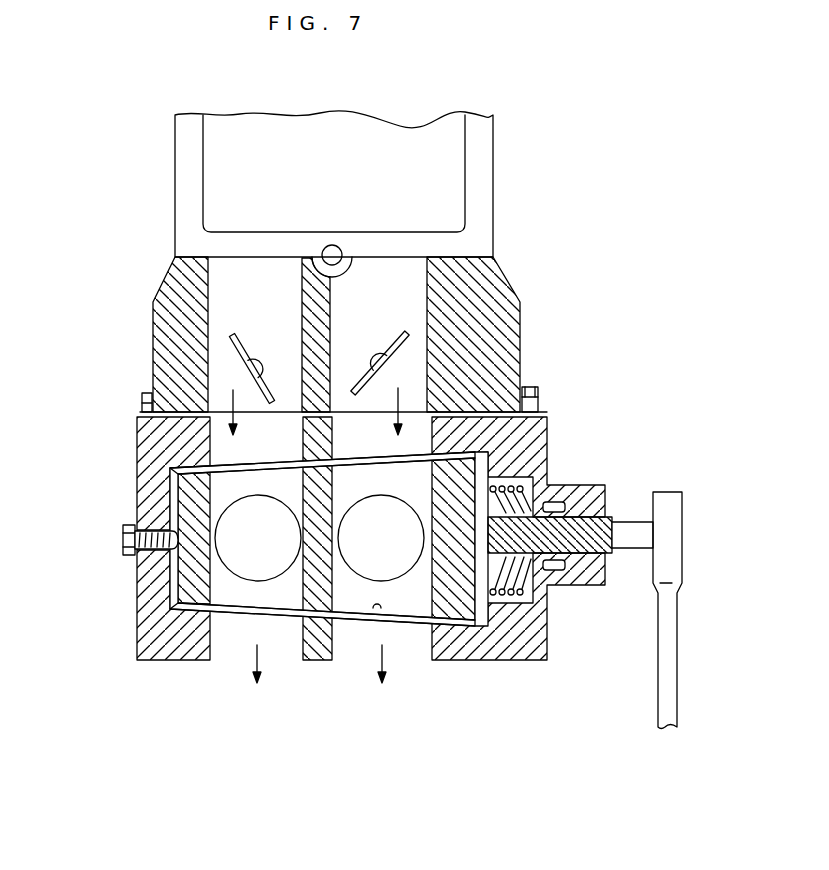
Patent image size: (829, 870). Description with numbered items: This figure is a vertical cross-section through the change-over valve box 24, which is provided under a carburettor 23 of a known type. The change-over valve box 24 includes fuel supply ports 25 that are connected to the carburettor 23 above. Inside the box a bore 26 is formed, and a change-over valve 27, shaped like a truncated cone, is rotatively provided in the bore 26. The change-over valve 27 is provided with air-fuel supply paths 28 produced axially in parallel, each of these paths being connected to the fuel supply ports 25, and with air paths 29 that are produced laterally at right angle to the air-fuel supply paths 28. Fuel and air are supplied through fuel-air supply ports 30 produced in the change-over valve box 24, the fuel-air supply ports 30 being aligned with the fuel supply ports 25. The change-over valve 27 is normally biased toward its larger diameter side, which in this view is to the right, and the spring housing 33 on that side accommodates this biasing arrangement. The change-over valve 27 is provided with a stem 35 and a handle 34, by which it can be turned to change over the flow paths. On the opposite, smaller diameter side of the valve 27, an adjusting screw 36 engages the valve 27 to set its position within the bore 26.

The carburettor 23 is at (497, 283).
The change-over valve box 24 is at (334, 535).
The fuel supply ports 25 is at (223, 447).
The bore 26 is at (377, 612).
The change-over valve 27 is at (287, 633).
The air-fuel supply paths 28 is at (243, 595).
The air paths 29 is at (240, 530).
The fuel-air supply ports 30 is at (277, 647).
The spring housing 33 is at (547, 477).
The handle 34 is at (670, 648).
The stem 35 is at (580, 540).
The adjusting screw 36 is at (138, 527).